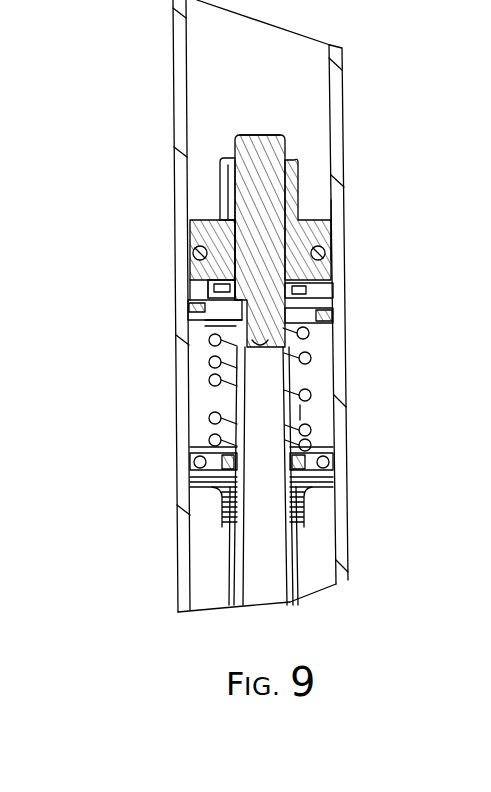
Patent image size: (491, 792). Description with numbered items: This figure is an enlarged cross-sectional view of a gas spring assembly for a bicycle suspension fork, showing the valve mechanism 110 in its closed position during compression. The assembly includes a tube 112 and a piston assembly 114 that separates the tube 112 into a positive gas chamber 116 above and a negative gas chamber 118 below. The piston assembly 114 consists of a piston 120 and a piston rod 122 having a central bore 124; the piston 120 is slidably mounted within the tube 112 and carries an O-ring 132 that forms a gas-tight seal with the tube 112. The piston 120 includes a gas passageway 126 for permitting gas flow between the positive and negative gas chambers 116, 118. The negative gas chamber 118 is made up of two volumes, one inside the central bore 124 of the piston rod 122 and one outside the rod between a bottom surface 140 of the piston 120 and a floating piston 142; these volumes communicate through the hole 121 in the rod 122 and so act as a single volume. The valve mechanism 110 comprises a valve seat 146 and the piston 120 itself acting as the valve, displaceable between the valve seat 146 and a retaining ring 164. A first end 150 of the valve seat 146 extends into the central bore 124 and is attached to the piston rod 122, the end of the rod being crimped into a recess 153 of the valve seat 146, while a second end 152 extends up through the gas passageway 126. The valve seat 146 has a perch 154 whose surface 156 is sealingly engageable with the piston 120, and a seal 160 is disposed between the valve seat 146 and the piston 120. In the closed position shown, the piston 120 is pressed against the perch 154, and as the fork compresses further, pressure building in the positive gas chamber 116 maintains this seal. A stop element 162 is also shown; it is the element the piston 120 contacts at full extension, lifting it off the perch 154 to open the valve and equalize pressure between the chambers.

The valve mechanism 110 is at (340, 232).
The tube 112 is at (336, 108).
The piston assembly 114 is at (230, 367).
The positive gas chamber 116 is at (258, 86).
The negative gas chamber 118 is at (318, 416).
The piston 120 is at (300, 200).
The hole 121 is at (300, 343).
The piston rod 122 is at (300, 375).
The central bore 124 is at (300, 540).
The gas passageway 126 is at (232, 198).
The O-ring 132 is at (325, 255).
The bottom surface 140 is at (196, 302).
The floating piston 142 is at (300, 478).
The valve seat 146 is at (230, 235).
The first end 150 is at (318, 325).
The second end 152 is at (250, 176).
The recess 153 is at (226, 325).
The perch 154 is at (320, 290).
The surface 156 is at (228, 283).
The seal 160 is at (223, 279).
The stop element 162 is at (225, 320).
The retaining ring 164 is at (285, 140).